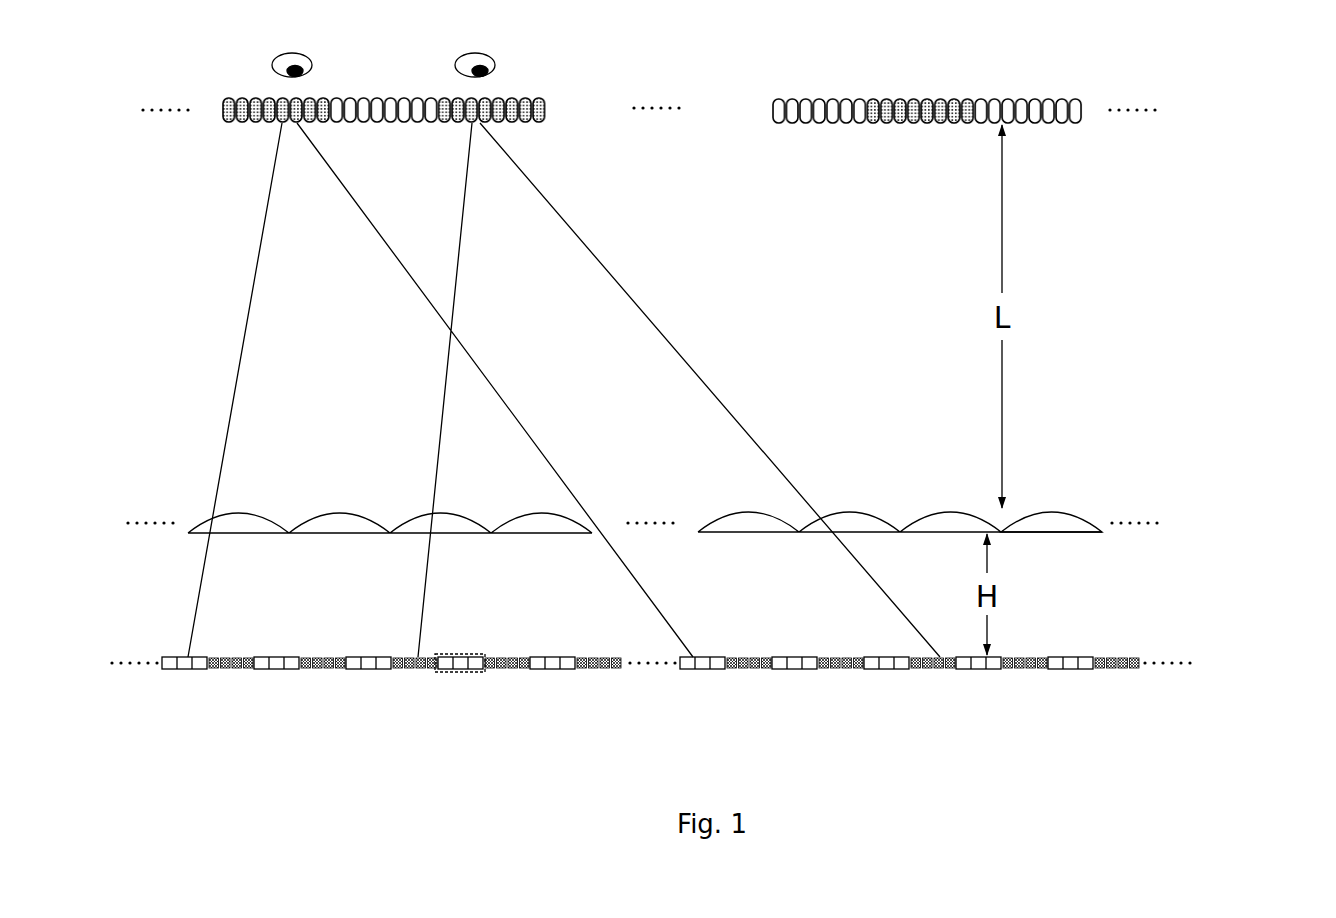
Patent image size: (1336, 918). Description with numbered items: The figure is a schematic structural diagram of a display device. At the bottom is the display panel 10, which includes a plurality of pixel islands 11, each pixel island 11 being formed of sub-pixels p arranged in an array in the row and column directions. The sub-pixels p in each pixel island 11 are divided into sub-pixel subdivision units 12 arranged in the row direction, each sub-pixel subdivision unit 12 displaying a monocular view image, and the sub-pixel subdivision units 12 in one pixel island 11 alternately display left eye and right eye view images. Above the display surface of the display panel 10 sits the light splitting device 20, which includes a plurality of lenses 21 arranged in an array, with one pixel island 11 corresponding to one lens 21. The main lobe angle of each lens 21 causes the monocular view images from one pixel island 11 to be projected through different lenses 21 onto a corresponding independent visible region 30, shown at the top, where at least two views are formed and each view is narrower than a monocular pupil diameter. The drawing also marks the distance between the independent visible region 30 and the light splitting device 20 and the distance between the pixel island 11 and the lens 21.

The display panel 10 is at (730, 689).
The pixel island 11 is at (910, 695).
The sub-pixel subdivision unit 12 is at (470, 672).
The light splitting device 20 is at (742, 543).
The lens 21 is at (1078, 534).
The independent visible region 30 is at (1078, 91).
The sub-pixel p is at (617, 668).